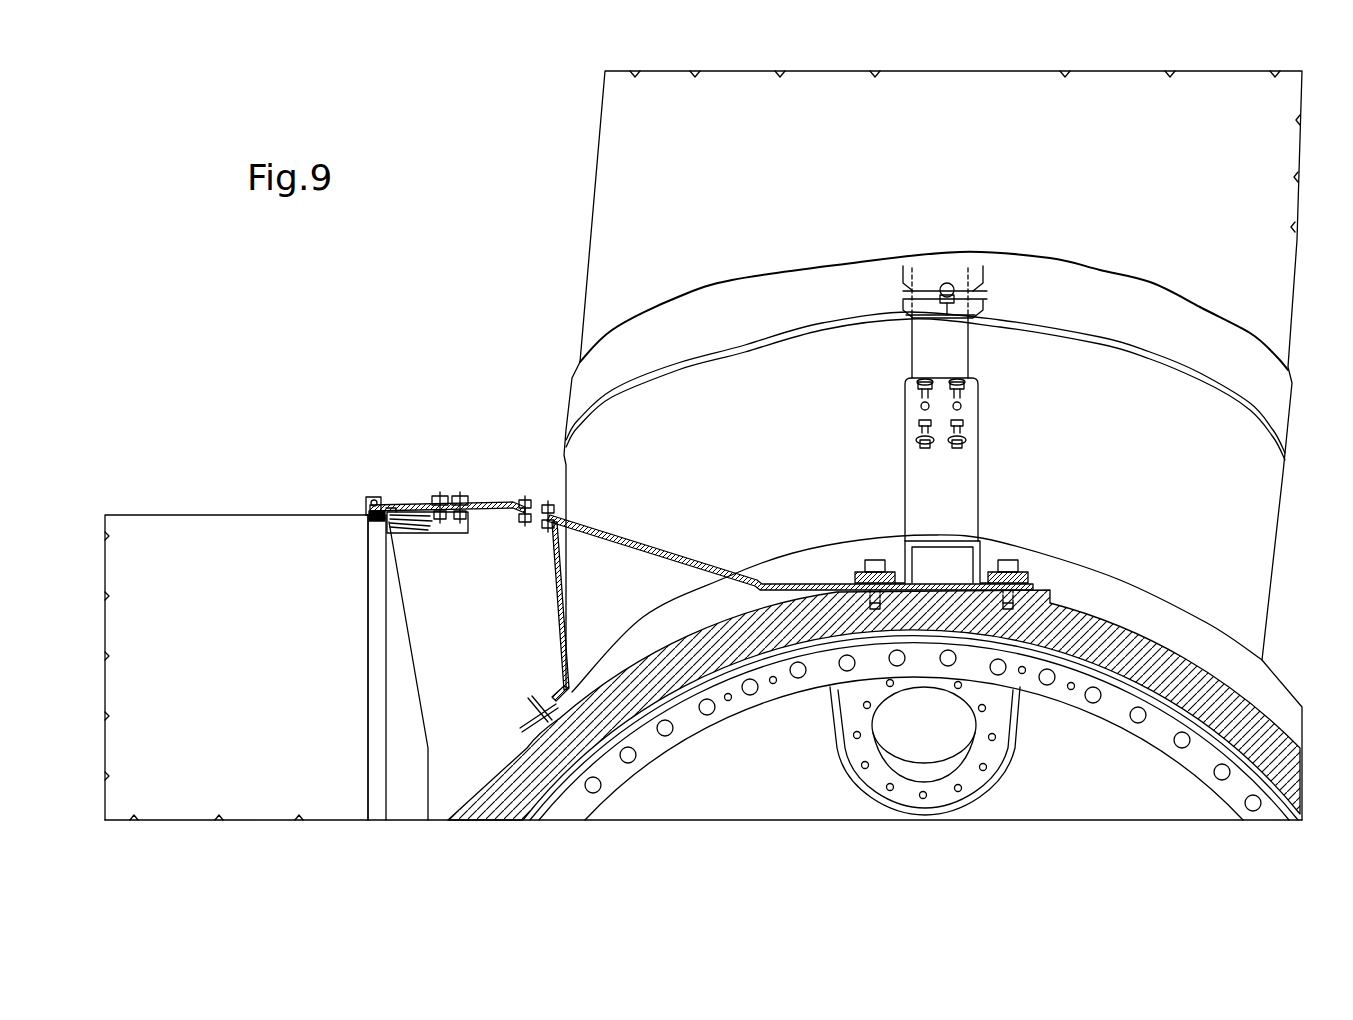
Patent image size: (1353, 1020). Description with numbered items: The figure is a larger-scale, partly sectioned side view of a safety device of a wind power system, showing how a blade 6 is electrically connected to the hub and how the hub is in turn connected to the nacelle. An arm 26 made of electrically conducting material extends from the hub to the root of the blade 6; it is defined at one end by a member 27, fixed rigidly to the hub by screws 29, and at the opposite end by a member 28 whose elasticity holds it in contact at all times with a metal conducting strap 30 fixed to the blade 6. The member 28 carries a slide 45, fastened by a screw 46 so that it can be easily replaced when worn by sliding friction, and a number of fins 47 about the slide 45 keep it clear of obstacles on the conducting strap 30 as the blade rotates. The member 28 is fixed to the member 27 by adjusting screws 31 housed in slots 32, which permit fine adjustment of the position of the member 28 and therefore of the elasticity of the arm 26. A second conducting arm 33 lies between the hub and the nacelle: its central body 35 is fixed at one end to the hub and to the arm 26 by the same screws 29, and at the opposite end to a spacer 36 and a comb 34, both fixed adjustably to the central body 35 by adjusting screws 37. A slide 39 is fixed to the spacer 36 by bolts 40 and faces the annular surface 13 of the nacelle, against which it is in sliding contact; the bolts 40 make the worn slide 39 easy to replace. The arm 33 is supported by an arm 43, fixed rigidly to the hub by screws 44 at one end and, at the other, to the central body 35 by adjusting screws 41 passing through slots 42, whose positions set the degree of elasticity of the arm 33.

The blade 6 is at (1230, 283).
The annular surface 13 is at (381, 556).
The arm 26 is at (988, 433).
The member 27 is at (960, 492).
The member 28 is at (945, 362).
The screws 29 is at (877, 560).
The metal conducting strap 30 is at (633, 340).
The adjusting screws 31 is at (920, 386).
The slots 32 is at (922, 412).
The arm 33 is at (668, 545).
The comb 34 is at (440, 535).
The central body 35 is at (500, 503).
The spacer 36 is at (387, 508).
The adjusting screws 37 is at (458, 496).
The slide 39 is at (370, 522).
The bolts 40 is at (374, 497).
The adjusting screws 41 is at (556, 520).
The slots 42 is at (524, 500).
The arm 43 is at (558, 648).
The screws 44 is at (530, 700).
The slide 45 is at (935, 292).
The screw 46 is at (948, 287).
The fins 47 is at (893, 275).